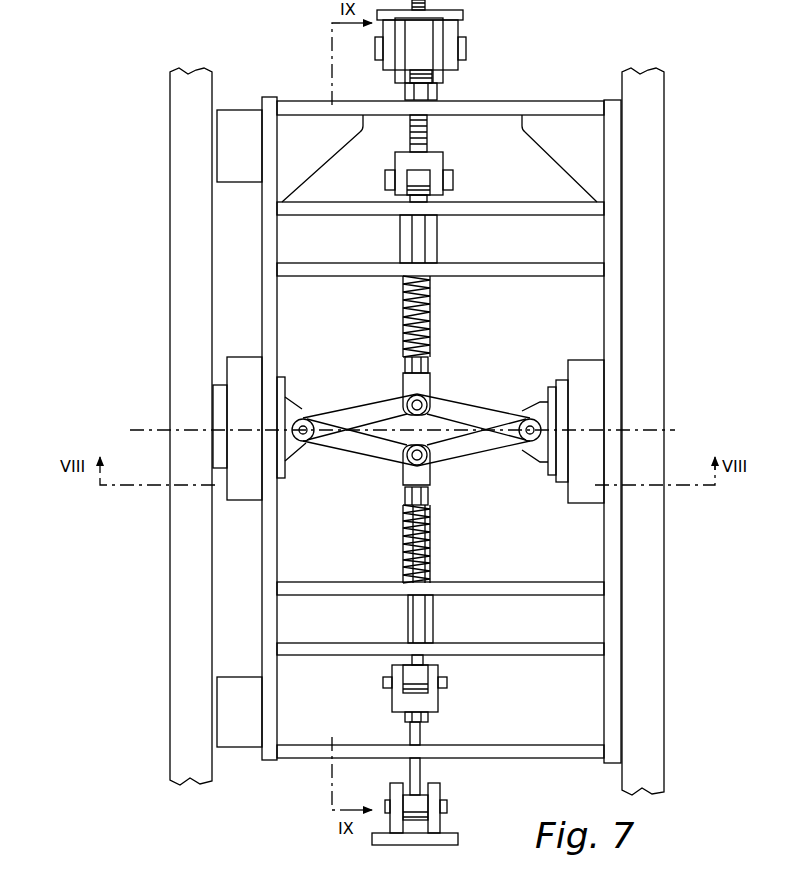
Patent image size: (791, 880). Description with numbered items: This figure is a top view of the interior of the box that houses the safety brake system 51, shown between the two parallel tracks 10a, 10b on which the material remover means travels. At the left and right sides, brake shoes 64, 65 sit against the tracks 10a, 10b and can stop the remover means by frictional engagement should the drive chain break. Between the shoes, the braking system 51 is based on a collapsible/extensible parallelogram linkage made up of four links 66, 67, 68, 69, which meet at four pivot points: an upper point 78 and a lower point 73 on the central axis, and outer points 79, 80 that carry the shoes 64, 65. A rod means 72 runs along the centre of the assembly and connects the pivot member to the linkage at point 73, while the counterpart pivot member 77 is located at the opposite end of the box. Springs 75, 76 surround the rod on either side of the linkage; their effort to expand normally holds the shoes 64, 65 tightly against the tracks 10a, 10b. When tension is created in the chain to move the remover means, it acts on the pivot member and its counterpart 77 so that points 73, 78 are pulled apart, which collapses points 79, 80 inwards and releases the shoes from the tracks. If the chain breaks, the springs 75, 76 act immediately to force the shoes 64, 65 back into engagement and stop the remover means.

The track 10a is at (175, 624).
The track 10b is at (655, 630).
The safety brake system 51 is at (582, 310).
The shoe 64 is at (220, 409).
The shoe 65 is at (623, 418).
The link 66 is at (368, 453).
The link 67 is at (372, 407).
The link 68 is at (470, 412).
The link 69 is at (462, 453).
The rod means 72 is at (430, 525).
The point 73 is at (408, 457).
The spring 75 is at (405, 540).
The spring 76 is at (432, 330).
The counterpart pivot member 77 is at (468, 36).
The point 78 is at (425, 400).
The point 79 is at (296, 414).
The point 80 is at (530, 417).